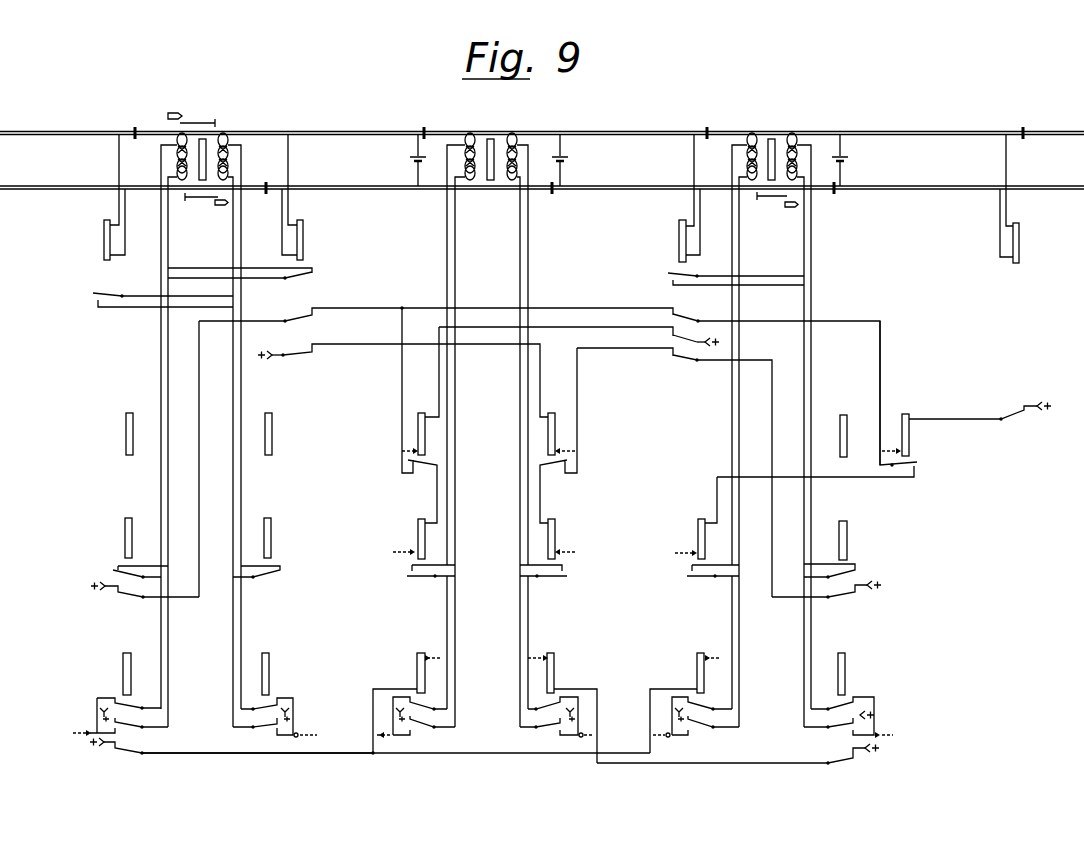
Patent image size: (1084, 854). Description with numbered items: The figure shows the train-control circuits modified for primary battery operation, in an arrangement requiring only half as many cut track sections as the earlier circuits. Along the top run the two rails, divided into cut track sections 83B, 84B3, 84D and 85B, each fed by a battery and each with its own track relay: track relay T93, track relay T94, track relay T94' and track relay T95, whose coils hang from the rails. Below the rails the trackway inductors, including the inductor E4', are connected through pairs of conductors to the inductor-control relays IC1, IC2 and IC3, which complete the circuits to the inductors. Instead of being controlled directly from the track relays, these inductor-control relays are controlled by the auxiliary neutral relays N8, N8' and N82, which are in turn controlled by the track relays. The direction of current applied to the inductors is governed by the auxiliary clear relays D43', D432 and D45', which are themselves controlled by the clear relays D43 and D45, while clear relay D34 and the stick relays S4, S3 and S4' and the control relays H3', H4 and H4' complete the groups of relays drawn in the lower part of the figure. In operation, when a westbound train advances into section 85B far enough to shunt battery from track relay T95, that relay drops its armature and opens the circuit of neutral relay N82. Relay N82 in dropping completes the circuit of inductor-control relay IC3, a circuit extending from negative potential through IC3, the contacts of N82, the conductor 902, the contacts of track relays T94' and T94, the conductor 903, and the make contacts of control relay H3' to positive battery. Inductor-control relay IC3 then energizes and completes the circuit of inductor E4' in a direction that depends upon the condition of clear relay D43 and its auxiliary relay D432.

The track section 83B is at (40, 161).
The track section 84B3 is at (336, 161).
The track section 84D is at (619, 161).
The track section 85B is at (1048, 161).
The inductor E4' is at (759, 125).
The track relay T93 is at (104, 240).
The track relay T94 is at (309, 197).
The track relay T94' is at (670, 198).
The track relay T95 is at (1019, 240).
The conductor 902 is at (863, 318).
The conductor 903 is at (199, 440).
The auxiliary neutral relay N8 is at (414, 425).
The auxiliary neutral relay N8' is at (560, 425).
The auxiliary neutral relay N82 is at (966, 429).
The relay S4 is at (117, 434).
The relay S3 is at (280, 434).
The relay S4' is at (856, 436).
The control relay H3' is at (129, 548).
The control relay H4 is at (265, 548).
The control relay H4' is at (826, 560).
The inductor-control relay IC1 is at (421, 548).
The inductor-control relay IC2 is at (552, 548).
The inductor-control relay IC3 is at (702, 527).
The clear relay D43 is at (223, 704).
The clear relay D34 is at (275, 695).
The auxiliary clear relay D43' is at (413, 704).
The auxiliary clear relay D45' is at (558, 708).
The auxiliary clear relay D432 is at (694, 703).
The clear relay D45 is at (848, 695).